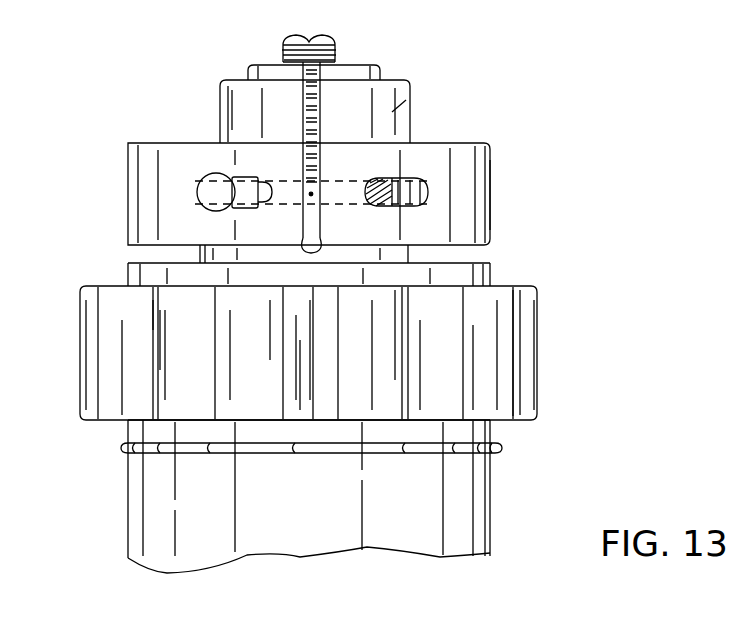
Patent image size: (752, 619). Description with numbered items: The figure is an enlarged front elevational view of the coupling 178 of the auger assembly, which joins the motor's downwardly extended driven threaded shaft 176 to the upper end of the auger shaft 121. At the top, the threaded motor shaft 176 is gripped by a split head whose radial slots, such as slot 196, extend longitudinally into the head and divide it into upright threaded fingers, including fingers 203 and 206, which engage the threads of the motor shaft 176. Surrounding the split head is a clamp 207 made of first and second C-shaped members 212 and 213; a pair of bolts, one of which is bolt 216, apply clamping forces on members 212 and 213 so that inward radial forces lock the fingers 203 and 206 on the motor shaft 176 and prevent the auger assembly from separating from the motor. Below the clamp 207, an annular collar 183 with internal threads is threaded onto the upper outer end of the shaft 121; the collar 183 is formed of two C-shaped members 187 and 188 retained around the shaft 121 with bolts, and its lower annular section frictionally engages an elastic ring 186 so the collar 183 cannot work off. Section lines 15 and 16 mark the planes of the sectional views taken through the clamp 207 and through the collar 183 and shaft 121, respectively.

The section line 15- 15 is at (93, 192).
The section line 16- 16 is at (314, 11).
The shaft 121 is at (487, 526).
The driven threaded shaft 176 is at (290, 38).
The coupling 178 is at (137, 110).
The annular collar 183 is at (58, 412).
The elastic ring 186 is at (123, 445).
The C-shaped member 187 is at (112, 340).
The C-shaped member 188 is at (504, 373).
The radial slot 196 is at (318, 108).
The upright finger 203 is at (396, 110).
The upright finger 206 is at (230, 118).
The clamp 207 is at (509, 134).
The first C-shaped member 212 is at (138, 190).
The second C-shaped member 213 is at (492, 184).
The bolt 216 is at (234, 198).